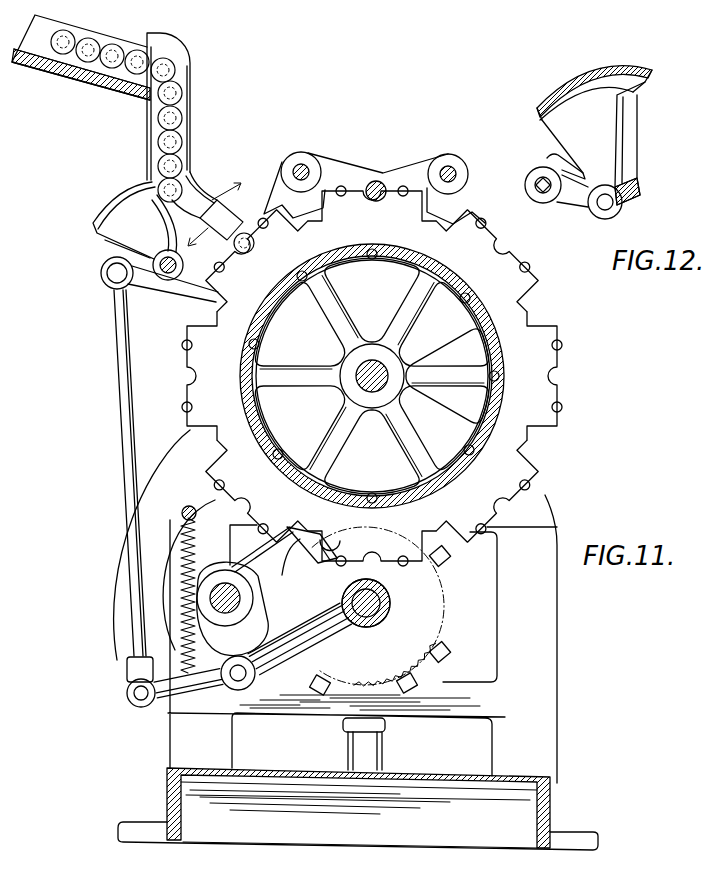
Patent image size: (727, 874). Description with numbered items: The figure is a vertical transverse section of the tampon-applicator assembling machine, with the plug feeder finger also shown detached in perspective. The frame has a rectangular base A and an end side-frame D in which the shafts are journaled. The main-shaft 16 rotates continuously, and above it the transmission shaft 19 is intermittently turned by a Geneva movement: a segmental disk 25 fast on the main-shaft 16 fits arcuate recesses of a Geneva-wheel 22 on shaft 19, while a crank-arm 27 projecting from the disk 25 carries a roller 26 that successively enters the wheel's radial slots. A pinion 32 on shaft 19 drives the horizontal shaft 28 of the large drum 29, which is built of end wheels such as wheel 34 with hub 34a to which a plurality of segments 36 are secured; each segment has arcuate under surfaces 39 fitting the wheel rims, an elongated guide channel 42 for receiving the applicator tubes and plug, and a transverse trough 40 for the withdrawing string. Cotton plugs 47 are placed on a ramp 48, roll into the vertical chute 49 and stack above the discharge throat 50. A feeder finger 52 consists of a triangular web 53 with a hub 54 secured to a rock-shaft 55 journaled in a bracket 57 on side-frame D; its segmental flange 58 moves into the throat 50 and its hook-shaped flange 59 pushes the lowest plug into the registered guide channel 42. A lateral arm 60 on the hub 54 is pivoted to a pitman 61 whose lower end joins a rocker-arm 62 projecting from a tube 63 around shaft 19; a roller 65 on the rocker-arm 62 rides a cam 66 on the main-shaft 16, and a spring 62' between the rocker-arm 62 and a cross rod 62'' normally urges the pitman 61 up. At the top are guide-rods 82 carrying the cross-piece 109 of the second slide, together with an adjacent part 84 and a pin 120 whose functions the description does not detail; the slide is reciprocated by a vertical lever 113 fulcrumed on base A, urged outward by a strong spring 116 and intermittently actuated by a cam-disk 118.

In FIG. 11, the ramp 48 is at (60, 70).
In FIG. 11, the plugs 47 is at (182, 90).
In FIG. 11, the vertical chute 49 is at (148, 122).
In FIG. 11, the discharge throat 50 is at (210, 180).
In FIG. 11, the feeder finger 52 is at (93, 219).
In FIG. 12, the feeder finger 52 is at (551, 91).
In FIG. 11, the segmental flange 58 is at (112, 200).
In FIG. 12, the segmental flange 58 is at (607, 72).
In FIG. 11, the triangular web 53 is at (118, 228).
In FIG. 12, the triangular web 53 is at (568, 124).
In FIG. 11, the hub 54 is at (152, 254).
In FIG. 12, the hub 54 is at (618, 208).
In FIG. 11, the rock-shaft 55 is at (162, 276).
In FIG. 11, the hook-shaped flange 59 is at (188, 282).
In FIG. 12, the hook-shaped flange 59 is at (640, 118).
In FIG. 11, the lateral arm 60 is at (106, 290).
In FIG. 12, the lateral arm 60 is at (574, 198).
In FIG. 11, the bracket 57 is at (210, 296).
In FIG. 11, the pitman 61 is at (119, 455).
In FIG. 11, the rocker-arm 62 is at (143, 698).
In FIG. 11, the spring 62' is at (222, 538).
In FIG. 11, the cross rod 62'' is at (168, 574).
In FIG. 11, the roller 65 is at (236, 680).
In FIG. 11, the drum 29 is at (546, 320).
In FIG. 11, the segments 36 is at (183, 336).
In FIG. 11, the guide channel 42 is at (188, 371).
In FIG. 11, the transverse trough 40 is at (548, 396).
In FIG. 11, the arcuate under surfaces 39 is at (378, 250).
In FIG. 11, the end wheel 34 is at (420, 302).
In FIG. 11, the hub 34a is at (402, 406).
In FIG. 11, the horizontal shaft 28 is at (388, 370).
In FIG. 11, the guide-rods 82 is at (303, 163).
In FIG. 11, the pawl 84 is at (316, 160).
In FIG. 11, the cross-piece 109 is at (334, 166).
In FIG. 11, the pawl pin 120 is at (378, 180).
In FIG. 11, the main-shaft 16 is at (224, 583).
In FIG. 11, the cam 66 is at (258, 630).
In FIG. 11, the roller 26 is at (310, 537).
In FIG. 11, the crank-arm 27 is at (312, 552).
In FIG. 11, the segmental disk 25 is at (170, 607).
In FIG. 11, the cam-disk 118 is at (108, 636).
In FIG. 11, the transmission shaft 19 is at (382, 603).
In FIG. 11, the tube 63 is at (368, 628).
In FIG. 11, the pinion 32 is at (443, 609).
In FIG. 11, the Geneva-wheel 22 is at (446, 645).
In FIG. 11, the side-frame D is at (556, 650).
In FIG. 11, the spring 116 is at (346, 750).
In FIG. 11, the vertical lever 113 is at (368, 743).
In FIG. 11, the base A is at (391, 838).